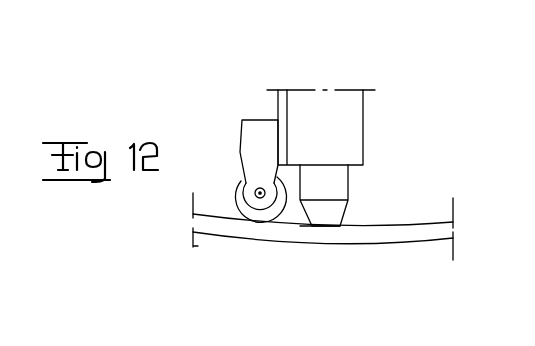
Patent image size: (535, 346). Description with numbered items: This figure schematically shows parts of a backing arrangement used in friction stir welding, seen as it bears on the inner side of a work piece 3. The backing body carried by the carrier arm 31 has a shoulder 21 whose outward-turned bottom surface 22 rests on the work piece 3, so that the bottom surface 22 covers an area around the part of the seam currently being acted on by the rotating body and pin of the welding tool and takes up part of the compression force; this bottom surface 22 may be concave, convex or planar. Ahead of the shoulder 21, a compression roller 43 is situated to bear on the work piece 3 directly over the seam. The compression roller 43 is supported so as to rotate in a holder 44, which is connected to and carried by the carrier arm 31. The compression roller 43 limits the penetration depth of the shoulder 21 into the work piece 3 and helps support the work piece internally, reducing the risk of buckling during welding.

The work piece 3 is at (415, 230).
The shoulder 21 is at (335, 214).
The bottom surface 22 is at (327, 227).
The carrier arm 31 is at (277, 98).
The compression roller 43 is at (241, 198).
The holder 44 is at (248, 127).